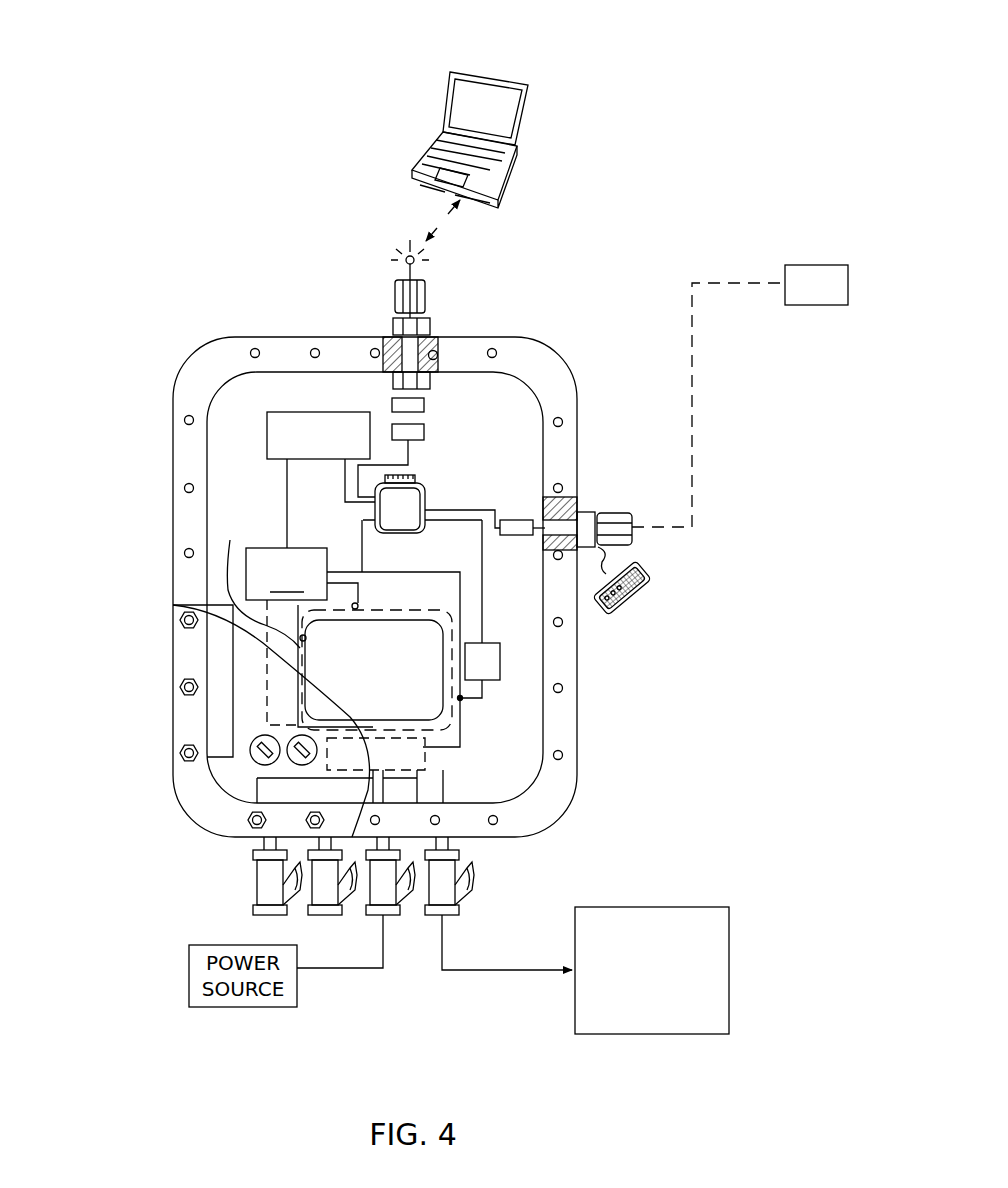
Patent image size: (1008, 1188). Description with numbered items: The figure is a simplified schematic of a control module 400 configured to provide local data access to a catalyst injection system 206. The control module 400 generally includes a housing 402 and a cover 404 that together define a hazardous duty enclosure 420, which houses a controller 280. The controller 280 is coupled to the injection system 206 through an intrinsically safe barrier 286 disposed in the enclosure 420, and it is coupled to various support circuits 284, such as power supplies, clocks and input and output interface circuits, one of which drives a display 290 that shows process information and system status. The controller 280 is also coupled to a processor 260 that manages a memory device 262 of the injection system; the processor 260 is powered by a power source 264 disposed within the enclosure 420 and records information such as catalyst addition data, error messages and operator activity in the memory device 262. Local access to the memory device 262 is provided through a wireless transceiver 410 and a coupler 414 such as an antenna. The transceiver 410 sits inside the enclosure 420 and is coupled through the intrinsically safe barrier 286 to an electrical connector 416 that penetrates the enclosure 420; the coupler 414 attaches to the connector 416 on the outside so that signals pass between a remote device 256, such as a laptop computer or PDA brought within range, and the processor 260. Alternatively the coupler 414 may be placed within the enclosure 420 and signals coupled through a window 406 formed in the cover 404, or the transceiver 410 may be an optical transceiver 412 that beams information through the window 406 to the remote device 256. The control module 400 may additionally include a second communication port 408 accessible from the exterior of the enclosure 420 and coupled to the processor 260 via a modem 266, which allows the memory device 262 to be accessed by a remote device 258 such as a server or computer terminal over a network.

The injection system 206 is at (585, 970).
The remote device 256 is at (485, 72).
The remote device 258 is at (800, 301).
The processor 260 is at (431, 508).
The memory device 262 is at (415, 478).
The power source 264 is at (500, 680).
The modem 266 is at (516, 520).
The controller 280 is at (300, 412).
The support circuits 284 is at (302, 656).
The intrinsically safe barrier 286 is at (424, 403).
The display 290 is at (423, 715).
The control module 400 is at (198, 232).
The housing 402 is at (283, 337).
The cover 404 is at (190, 647).
The window 406 is at (323, 707).
The second communication port 408 is at (592, 498).
The wireless transceiver 410 is at (428, 432).
The optical transceiver 412 is at (261, 580).
The coupler 414 is at (393, 271).
The electrical connector 416 is at (420, 345).
The hazardous duty enclosure 420 is at (170, 412).